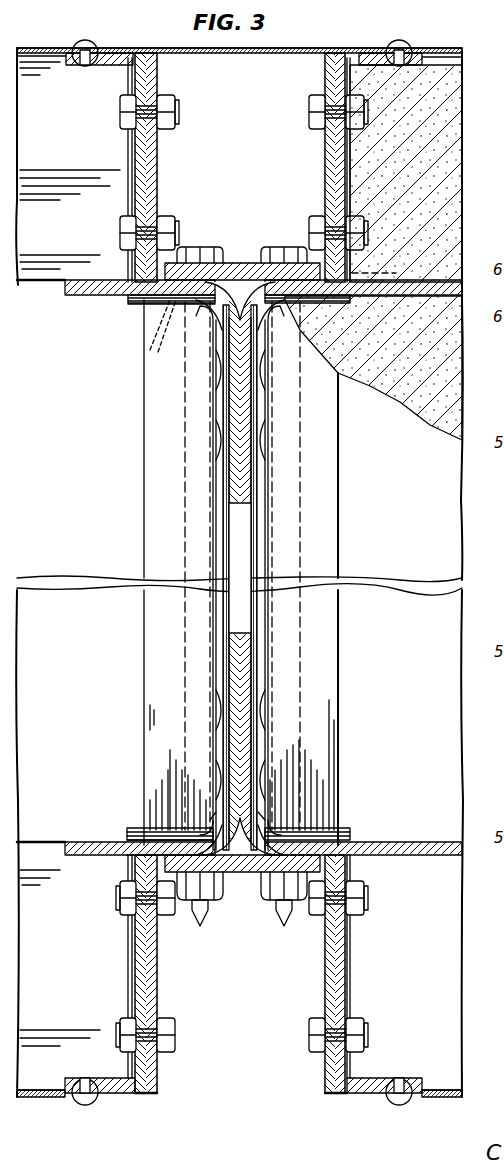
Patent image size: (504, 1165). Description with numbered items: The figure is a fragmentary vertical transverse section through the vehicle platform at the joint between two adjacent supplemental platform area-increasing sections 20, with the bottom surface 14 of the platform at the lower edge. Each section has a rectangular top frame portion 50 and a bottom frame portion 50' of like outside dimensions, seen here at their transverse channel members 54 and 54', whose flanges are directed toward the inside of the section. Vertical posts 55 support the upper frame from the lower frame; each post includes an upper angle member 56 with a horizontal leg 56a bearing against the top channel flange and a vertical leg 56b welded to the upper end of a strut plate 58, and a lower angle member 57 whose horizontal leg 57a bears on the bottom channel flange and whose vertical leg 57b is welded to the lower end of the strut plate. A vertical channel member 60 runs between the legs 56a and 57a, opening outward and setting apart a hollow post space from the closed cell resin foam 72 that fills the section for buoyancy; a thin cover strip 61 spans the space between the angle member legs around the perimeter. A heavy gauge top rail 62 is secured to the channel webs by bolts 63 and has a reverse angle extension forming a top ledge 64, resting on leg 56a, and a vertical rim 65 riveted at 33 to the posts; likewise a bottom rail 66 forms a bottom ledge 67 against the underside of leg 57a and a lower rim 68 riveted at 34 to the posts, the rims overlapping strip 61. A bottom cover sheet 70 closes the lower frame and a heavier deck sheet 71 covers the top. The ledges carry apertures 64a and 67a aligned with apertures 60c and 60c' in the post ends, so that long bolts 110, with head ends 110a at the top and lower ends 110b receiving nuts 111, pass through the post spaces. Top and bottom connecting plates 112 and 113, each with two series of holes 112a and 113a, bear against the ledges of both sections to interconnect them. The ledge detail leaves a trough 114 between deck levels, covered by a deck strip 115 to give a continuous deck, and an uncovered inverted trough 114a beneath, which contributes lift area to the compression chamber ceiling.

The bottom surface 14 is at (58, 1100).
The supplemental platform area-increasing section 20 is at (104, 51).
The rivets 33 is at (214, 438).
The rivets 34 is at (272, 692).
The top frame portion 50 is at (285, 170).
The bottom frame portion 50' is at (243, 966).
The transverse channel members 54 is at (253, 282).
The transverse channel members 54' is at (241, 1113).
The vertical posts 55 is at (142, 548).
The angle member 56 is at (142, 306).
The horizontal leg 56a is at (130, 300).
The vertical leg 56b is at (296, 362).
The angle member 57 is at (160, 842).
The horizontal leg 57a is at (130, 833).
The vertical leg 57b is at (256, 815).
The strut plate 58 is at (258, 557).
The vertical channel member 60 is at (333, 632).
The aperture 60c is at (218, 338).
The aperture 60c' is at (289, 802).
The cover strip 61 is at (226, 623).
The top rail 62 is at (156, 182).
The bolts 63 is at (172, 118).
The top ledge 64 is at (200, 297).
The apertures 64a is at (154, 362).
The vertical rim 65 is at (249, 404).
The bottom rail 66 is at (158, 993).
The bottom ledge 67 is at (225, 832).
The apertures 67a is at (242, 875).
The lower rim 68 is at (238, 670).
The bottom cover sheet 70 is at (92, 1100).
The deck sheet 71 is at (55, 36).
The resin foam 72 is at (452, 364).
The long bolts 110 is at (202, 525).
The head ends 110a is at (201, 262).
The lower ends 110b is at (205, 913).
The nuts 111 is at (274, 896).
The top connecting plate 112 is at (262, 261).
The holes 112a is at (140, 348).
The bottom connecting plate 113 is at (196, 830).
The holes 113a is at (352, 834).
The trough 114 is at (322, 58).
The inverted trough 114a is at (250, 1058).
The deck strip 115 is at (286, 51).